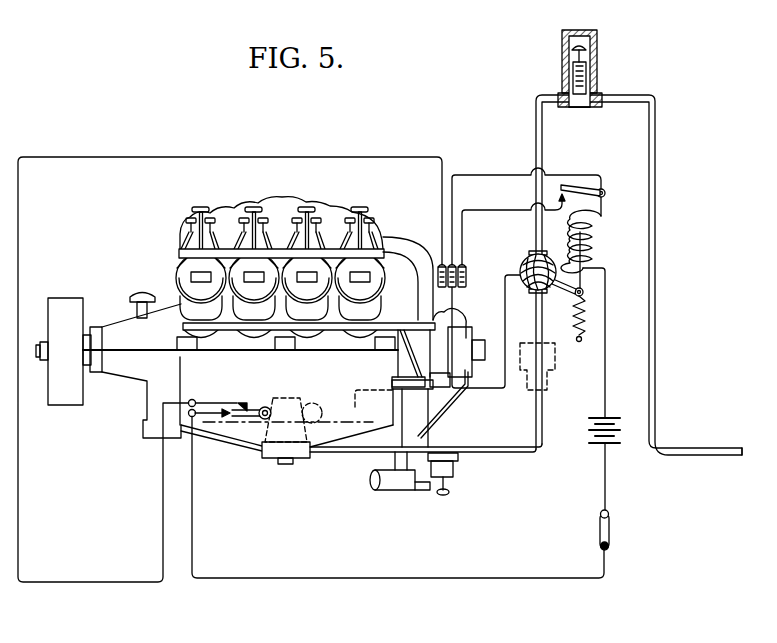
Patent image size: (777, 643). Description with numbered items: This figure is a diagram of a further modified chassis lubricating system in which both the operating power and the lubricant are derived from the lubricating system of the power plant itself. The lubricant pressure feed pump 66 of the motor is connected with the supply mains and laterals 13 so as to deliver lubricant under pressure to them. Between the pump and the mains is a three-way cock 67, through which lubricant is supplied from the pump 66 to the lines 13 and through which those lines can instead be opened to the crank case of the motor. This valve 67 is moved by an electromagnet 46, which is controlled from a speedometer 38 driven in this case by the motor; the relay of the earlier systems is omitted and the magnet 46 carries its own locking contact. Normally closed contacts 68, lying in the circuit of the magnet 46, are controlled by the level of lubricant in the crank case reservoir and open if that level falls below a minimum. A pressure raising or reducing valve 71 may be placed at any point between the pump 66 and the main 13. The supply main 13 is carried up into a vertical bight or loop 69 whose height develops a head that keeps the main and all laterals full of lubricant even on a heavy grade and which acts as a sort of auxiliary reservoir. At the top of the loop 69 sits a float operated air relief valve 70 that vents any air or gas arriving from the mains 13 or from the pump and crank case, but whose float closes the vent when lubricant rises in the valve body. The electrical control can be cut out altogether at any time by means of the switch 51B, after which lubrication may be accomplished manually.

The float operated air relief valve 70 is at (598, 62).
The vertical bight or loop 69 is at (649, 131).
The electromagnet 46 is at (593, 240).
The three-way cock 67 is at (524, 258).
The speedometer 38 is at (468, 274).
The pressure raising or reducing valve 71 is at (557, 381).
The normally closed contacts 68 is at (261, 408).
The lubricant pressure feed pump 66 is at (297, 458).
The supply mains and laterals 13 is at (711, 448).
The switch 51B is at (600, 530).